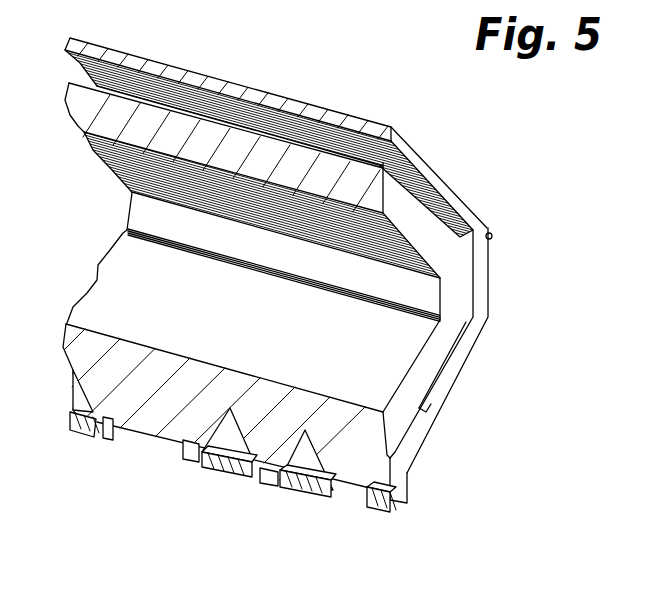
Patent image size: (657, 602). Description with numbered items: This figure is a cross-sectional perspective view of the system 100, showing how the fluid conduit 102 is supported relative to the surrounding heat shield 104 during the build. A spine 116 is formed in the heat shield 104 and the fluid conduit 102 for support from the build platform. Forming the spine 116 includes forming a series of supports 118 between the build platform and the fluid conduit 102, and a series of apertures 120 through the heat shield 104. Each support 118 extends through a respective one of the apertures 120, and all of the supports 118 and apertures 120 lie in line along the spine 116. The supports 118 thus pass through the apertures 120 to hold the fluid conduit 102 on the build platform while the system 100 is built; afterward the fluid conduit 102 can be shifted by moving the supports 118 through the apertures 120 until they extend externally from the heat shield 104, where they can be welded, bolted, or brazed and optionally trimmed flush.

The system 100 is at (530, 233).
The fluid conduit 102 is at (443, 333).
The heat shield 104 is at (483, 274).
The spine 116 is at (416, 491).
The supports 118 is at (106, 426).
The apertures 120 is at (190, 471).